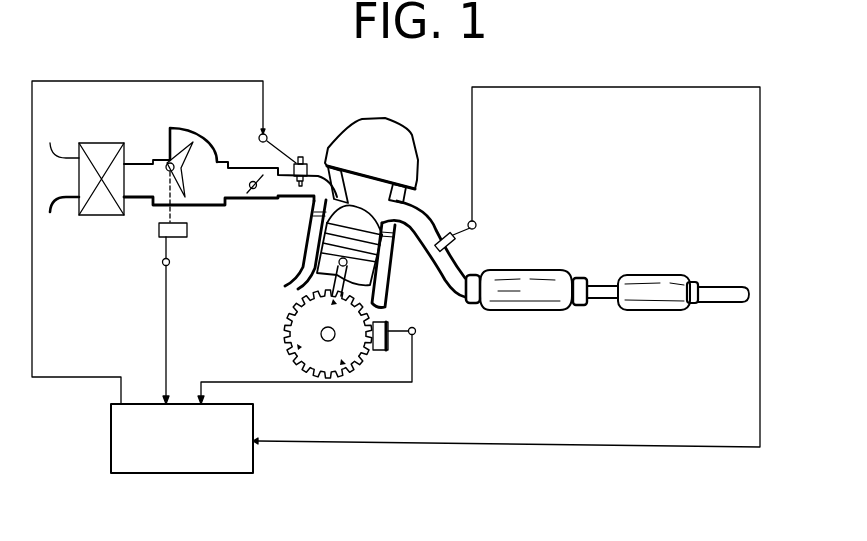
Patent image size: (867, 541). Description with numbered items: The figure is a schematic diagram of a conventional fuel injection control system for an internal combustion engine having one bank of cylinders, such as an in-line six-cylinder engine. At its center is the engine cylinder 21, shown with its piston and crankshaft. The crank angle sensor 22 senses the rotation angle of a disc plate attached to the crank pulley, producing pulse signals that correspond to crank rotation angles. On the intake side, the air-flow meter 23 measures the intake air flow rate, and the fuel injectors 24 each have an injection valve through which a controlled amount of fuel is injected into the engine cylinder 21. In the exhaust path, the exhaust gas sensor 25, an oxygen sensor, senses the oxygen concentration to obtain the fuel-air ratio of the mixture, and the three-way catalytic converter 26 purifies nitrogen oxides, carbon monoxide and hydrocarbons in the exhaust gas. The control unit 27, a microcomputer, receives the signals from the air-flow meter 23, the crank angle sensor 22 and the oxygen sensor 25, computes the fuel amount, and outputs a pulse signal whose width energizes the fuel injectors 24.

The engine cylinder 21 is at (386, 142).
The crank angle sensor 22 is at (388, 347).
The air-flow meter 23 is at (214, 128).
The fuel injectors 24 is at (310, 168).
The exhaust gas sensor 25 is at (455, 238).
The three-way catalytic converter 26 is at (540, 285).
The control unit 27 is at (196, 450).